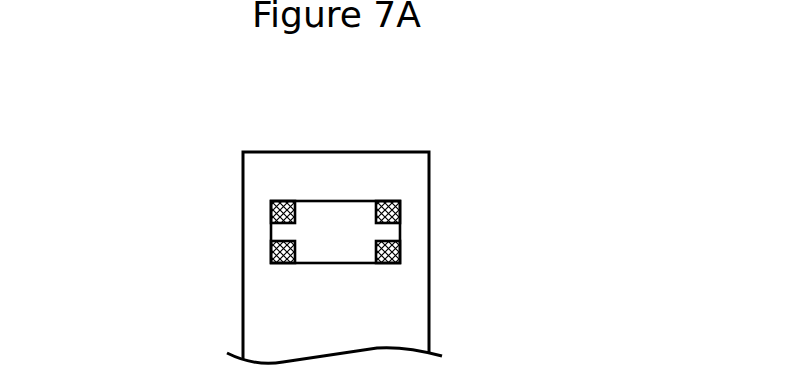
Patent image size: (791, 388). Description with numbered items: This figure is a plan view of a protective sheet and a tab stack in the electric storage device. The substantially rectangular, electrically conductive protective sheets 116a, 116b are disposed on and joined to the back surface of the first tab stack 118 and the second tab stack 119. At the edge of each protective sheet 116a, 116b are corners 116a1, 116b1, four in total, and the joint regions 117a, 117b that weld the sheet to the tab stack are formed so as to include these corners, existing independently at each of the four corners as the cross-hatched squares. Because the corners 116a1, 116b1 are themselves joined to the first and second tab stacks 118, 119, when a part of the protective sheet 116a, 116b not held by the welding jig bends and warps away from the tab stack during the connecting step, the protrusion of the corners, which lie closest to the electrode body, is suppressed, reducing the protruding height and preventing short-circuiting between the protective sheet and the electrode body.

The first tab stack 118 is at (334, 218).
The second tab stack 119 is at (340, 165).
The protective sheet 116a is at (450, 205).
The protective sheet 116b is at (337, 208).
The joint region 117a is at (214, 228).
The joint region 117b is at (271, 208).
The corner 116a1 is at (519, 278).
The corner 116b1 is at (401, 264).